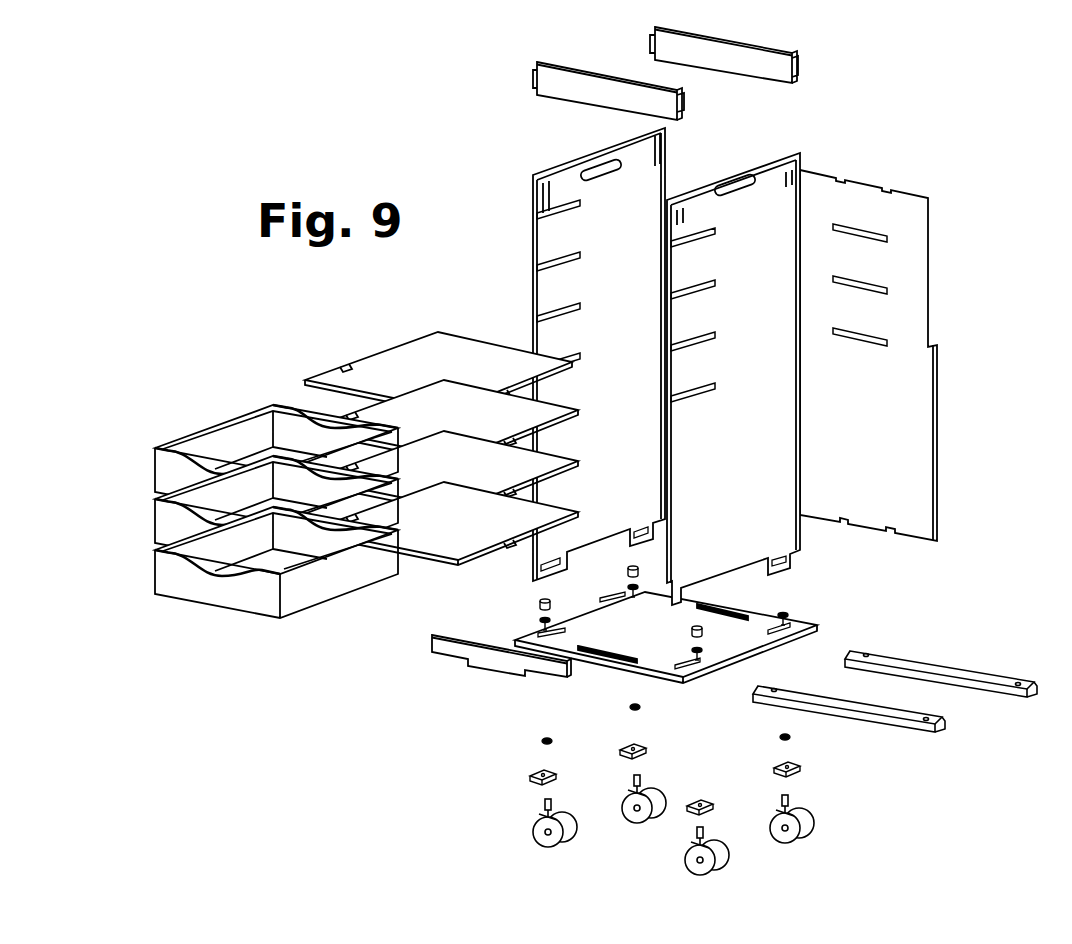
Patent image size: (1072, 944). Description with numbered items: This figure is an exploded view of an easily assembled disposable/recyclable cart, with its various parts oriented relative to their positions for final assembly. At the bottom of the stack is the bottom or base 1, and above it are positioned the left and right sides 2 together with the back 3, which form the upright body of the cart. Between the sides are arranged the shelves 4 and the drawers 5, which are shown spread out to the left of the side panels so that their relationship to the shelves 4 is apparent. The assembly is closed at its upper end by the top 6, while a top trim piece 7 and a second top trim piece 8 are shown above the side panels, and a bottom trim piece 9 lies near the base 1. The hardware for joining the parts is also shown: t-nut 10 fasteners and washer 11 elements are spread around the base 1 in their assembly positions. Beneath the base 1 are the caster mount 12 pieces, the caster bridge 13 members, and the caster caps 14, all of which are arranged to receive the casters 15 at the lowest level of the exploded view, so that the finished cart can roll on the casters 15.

The bottom or base 1 is at (666, 637).
The left and right sides 2 is at (666, 366).
The back 3 is at (868, 355).
The shelves 4 is at (444, 472).
The drawers 5 is at (276, 511).
The top 6 is at (438, 373).
The top trim piece 7 is at (608, 91).
The top trim piece 8 is at (724, 55).
The bottom trim piece 9 is at (501, 656).
The t-nut 10 is at (785, 606).
The washer 11 is at (643, 752).
The caster mount 12 is at (568, 774).
The caster bridge 13 is at (835, 694).
The caster caps 14 is at (680, 627).
The casters 15 is at (770, 834).